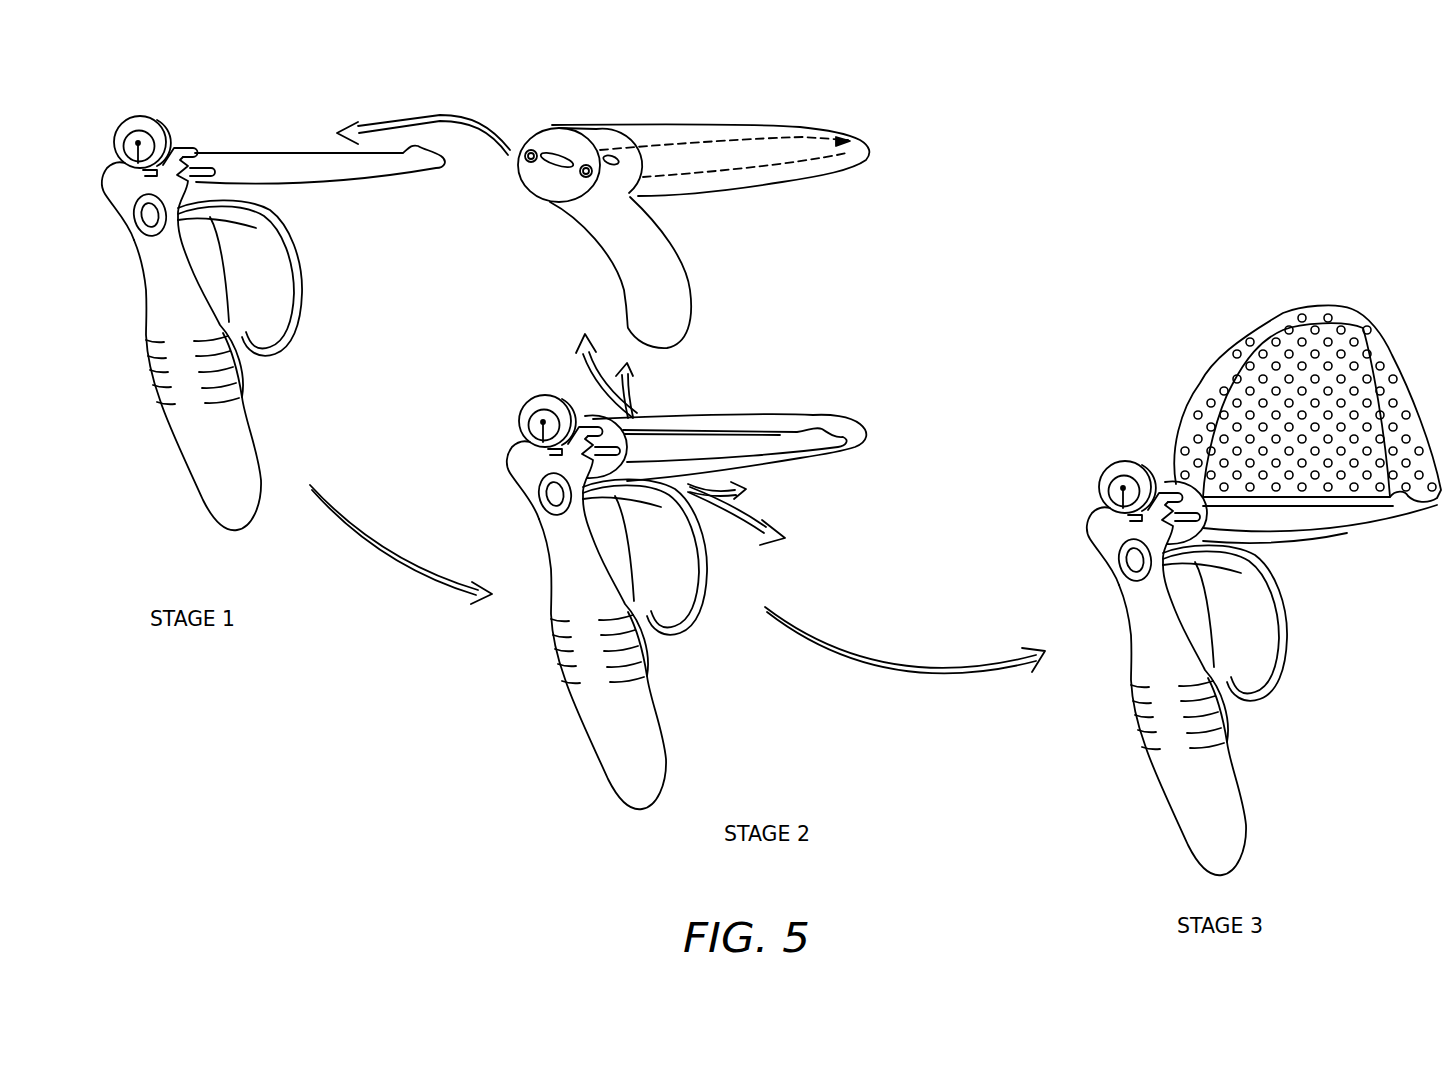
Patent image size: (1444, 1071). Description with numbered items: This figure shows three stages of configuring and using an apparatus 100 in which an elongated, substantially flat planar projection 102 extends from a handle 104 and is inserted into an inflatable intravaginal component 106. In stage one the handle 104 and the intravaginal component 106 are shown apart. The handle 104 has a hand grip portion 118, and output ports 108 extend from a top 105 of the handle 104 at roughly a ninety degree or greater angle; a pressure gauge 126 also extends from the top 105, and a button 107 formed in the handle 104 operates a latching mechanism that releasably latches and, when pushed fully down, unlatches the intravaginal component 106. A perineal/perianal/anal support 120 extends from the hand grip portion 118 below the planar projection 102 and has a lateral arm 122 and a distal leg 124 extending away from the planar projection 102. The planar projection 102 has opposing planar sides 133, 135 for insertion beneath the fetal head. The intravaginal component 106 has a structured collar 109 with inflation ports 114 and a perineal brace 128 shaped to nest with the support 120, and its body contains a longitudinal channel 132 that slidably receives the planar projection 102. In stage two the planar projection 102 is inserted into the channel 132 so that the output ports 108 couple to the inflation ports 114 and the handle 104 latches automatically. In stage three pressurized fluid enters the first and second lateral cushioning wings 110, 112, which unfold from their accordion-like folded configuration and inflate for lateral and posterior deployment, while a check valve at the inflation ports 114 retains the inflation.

The apparatus 100 is at (902, 127).
The planar projection 102 is at (303, 140).
The handle 104 is at (135, 313).
The top of the handle 105 is at (108, 165).
The intravaginal component 106 is at (703, 112).
The button 107 is at (147, 215).
The output ports 108 is at (178, 138).
The structured collar 109 is at (533, 123).
The first lateral cushioning wing 110 is at (1240, 327).
The second lateral cushioning wing 112 is at (1387, 320).
The inflation ports 114 is at (577, 183).
The hand grip portion 118 is at (192, 425).
The perineal/perianal/anal support 120 is at (302, 348).
The lateral arm 122 is at (217, 206).
The distal leg 124 is at (273, 303).
The pressure gauge 126 is at (120, 120).
The perineal brace 128 is at (688, 262).
The longitudinal channel 132 is at (872, 152).
The first planar side 133 is at (236, 163).
The second planar side 135 is at (222, 175).